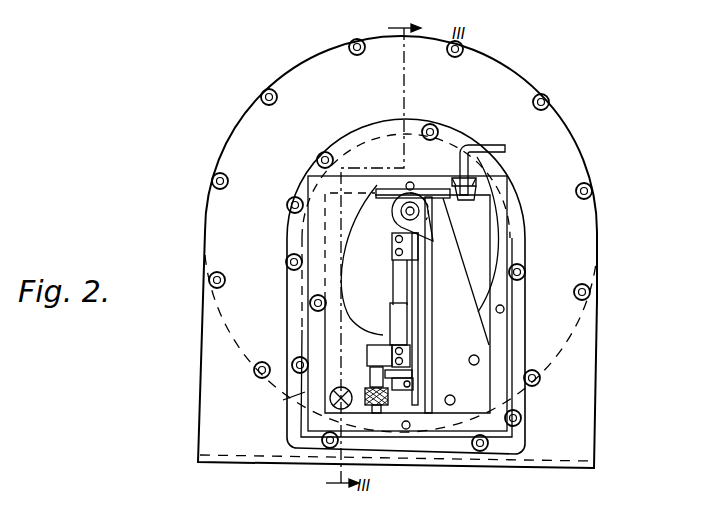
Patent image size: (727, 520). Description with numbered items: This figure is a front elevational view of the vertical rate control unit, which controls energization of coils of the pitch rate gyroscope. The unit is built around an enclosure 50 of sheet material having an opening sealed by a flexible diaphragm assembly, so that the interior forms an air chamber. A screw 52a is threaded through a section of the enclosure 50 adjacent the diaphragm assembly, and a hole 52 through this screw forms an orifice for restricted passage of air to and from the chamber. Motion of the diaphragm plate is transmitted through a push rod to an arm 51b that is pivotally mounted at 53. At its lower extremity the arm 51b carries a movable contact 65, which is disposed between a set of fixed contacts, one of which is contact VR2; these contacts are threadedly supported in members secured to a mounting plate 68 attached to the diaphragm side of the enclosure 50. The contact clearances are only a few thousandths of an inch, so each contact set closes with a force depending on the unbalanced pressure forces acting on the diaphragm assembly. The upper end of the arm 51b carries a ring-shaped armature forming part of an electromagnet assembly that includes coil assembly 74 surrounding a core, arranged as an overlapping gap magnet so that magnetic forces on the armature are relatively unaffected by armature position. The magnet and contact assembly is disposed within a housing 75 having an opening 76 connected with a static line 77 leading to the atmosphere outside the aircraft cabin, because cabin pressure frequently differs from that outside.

The enclosure 50 is at (218, 163).
The housing 75 is at (318, 186).
The static line 77 is at (506, 148).
The opening 76 is at (456, 186).
The coil assembly 74 is at (395, 218).
The arm 51b is at (393, 271).
The pivot 53 is at (390, 306).
The mounting plate 68 is at (437, 257).
The movable contact 65 is at (405, 371).
The contact VR2 is at (388, 391).
The hole 52 is at (348, 392).
The screw 52a is at (331, 400).